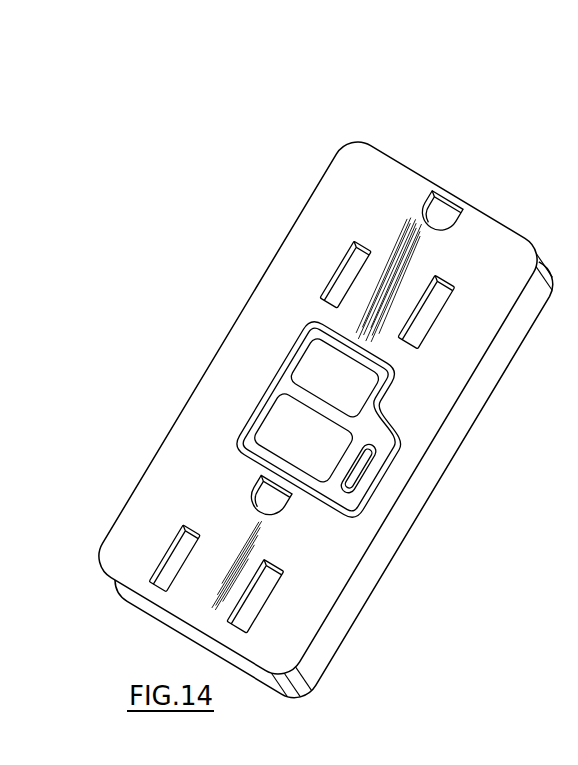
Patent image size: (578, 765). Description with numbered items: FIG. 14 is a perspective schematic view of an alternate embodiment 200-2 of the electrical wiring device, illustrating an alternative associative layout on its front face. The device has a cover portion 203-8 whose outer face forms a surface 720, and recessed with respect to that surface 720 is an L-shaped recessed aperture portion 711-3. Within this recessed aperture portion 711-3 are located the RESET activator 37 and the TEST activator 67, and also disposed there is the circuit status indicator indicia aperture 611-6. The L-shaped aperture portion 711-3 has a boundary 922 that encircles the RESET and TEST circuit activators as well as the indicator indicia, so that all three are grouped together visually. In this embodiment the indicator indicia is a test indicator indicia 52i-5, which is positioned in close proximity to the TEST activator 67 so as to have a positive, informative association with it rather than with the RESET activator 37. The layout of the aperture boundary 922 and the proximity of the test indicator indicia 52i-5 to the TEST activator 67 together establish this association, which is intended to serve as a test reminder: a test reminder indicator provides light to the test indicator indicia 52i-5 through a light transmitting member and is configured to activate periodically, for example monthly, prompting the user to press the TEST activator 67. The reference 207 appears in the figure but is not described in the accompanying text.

The alternate embodiment 200-2 is at (279, 132).
The cover portion 203-8 is at (236, 242).
The RESET activator 37 is at (308, 322).
The L-shaped recessed aperture portion 711-3 is at (288, 392).
The boundary 922 is at (272, 381).
The TEST activator 67 is at (243, 455).
The surface 720 is at (435, 353).
The circuit status indicator indicia aperture 611-6 is at (373, 463).
The test indicator indicia 52i-5 is at (367, 478).
The receptacle slot / outlet 207 is at (284, 597).